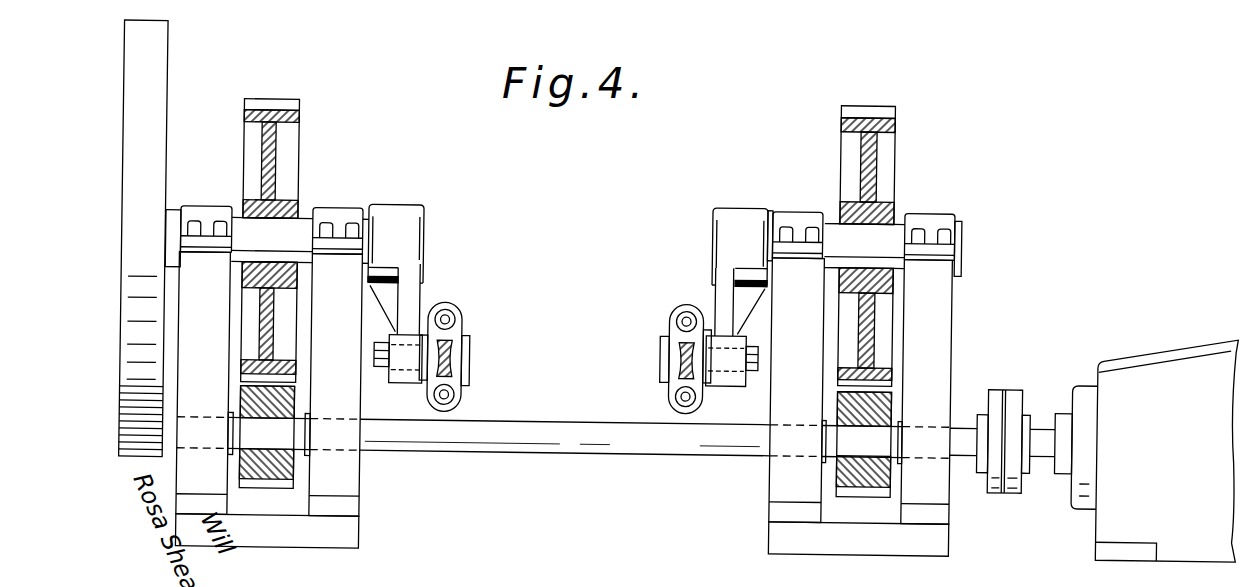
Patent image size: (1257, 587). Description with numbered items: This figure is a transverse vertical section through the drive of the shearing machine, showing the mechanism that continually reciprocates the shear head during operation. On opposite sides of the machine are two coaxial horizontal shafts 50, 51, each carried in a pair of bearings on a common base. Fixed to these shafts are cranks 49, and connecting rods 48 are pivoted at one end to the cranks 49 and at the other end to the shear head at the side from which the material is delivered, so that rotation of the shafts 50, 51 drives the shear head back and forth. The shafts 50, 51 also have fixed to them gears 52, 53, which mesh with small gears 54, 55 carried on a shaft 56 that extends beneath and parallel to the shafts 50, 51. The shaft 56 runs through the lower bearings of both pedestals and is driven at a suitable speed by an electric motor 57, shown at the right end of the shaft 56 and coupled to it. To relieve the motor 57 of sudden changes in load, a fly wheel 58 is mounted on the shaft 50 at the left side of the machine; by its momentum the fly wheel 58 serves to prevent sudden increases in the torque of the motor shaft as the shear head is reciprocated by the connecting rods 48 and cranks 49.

The connecting rod 48 is at (448, 354).
The crank 49 is at (408, 301).
The horizontal shaft 50 is at (299, 227).
The horizontal shaft 51 is at (832, 224).
The gear 52 is at (294, 148).
The gear 53 is at (892, 153).
The small gear 54 is at (292, 480).
The small gear 55 is at (867, 469).
The shaft 56 is at (452, 451).
The electric motor 57 is at (1150, 361).
The fly wheel 58 is at (156, 141).